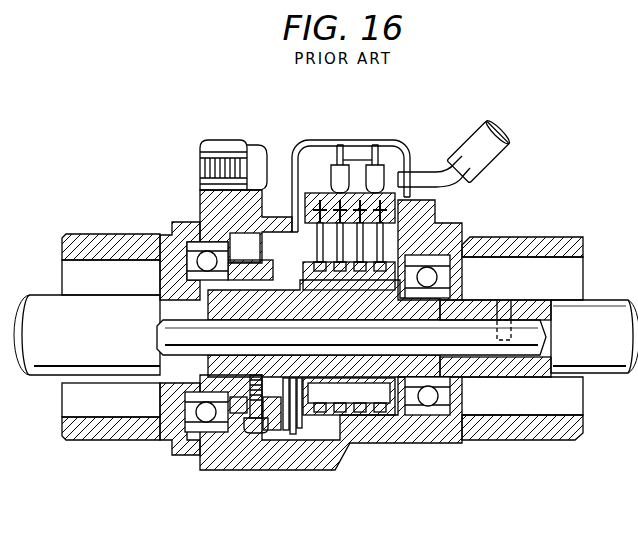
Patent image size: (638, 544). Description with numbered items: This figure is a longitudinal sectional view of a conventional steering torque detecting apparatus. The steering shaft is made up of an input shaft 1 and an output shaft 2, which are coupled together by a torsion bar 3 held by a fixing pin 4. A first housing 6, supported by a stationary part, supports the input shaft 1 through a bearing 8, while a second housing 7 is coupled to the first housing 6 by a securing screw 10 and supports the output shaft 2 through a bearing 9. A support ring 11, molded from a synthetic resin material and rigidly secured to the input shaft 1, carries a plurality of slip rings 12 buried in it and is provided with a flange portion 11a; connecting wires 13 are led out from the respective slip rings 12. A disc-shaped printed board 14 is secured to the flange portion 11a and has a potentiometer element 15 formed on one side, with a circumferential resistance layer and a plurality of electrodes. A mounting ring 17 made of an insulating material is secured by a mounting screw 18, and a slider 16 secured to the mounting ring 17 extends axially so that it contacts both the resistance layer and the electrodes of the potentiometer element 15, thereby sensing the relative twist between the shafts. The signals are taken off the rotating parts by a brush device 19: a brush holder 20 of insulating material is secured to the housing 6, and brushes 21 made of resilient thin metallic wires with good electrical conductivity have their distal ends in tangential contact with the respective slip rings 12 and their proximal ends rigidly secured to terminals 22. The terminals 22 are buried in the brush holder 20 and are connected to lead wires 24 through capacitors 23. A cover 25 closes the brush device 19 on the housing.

The input shaft 1 is at (606, 300).
The output shaft 2 is at (42, 295).
The torsion bar 3 is at (470, 378).
The fixing pin 4 is at (505, 318).
The first housing 6 is at (585, 240).
The second housing 7 is at (94, 235).
The bearing 8 is at (432, 418).
The bearing 9 is at (200, 415).
The securing screw 10 is at (257, 148).
The support ring 11 is at (400, 425).
The flange portion 11a is at (325, 425).
The slip rings 12 is at (384, 420).
The connecting wires 13 is at (274, 262).
The printed board 14 is at (300, 430).
The potentiometer element 15 is at (293, 436).
The slider 16 is at (286, 432).
The mounting ring 17 is at (256, 434).
The mounting screw 18 is at (240, 418).
The brush device 19 is at (431, 218).
The brush holder 20 is at (395, 215).
The brushes 21 is at (385, 262).
The terminals 22 is at (385, 240).
The capacitors 23 is at (377, 163).
The lead wires 24 is at (434, 173).
The cover 25 is at (338, 140).